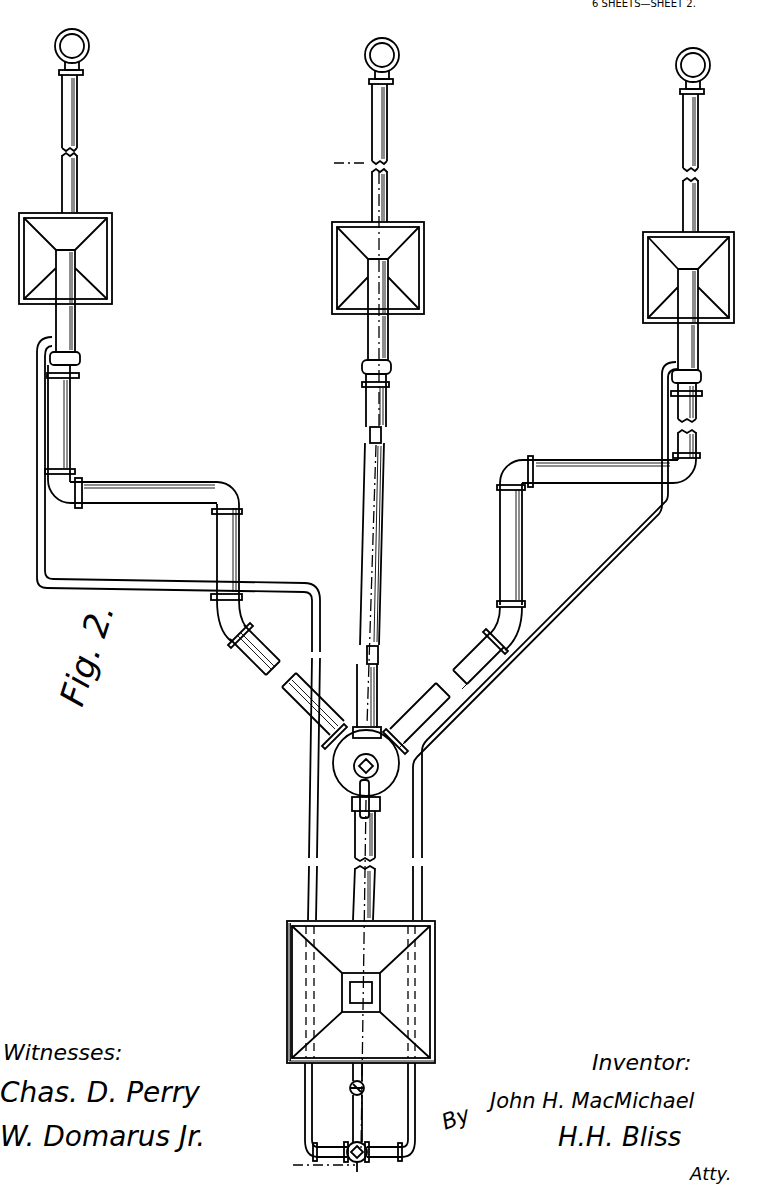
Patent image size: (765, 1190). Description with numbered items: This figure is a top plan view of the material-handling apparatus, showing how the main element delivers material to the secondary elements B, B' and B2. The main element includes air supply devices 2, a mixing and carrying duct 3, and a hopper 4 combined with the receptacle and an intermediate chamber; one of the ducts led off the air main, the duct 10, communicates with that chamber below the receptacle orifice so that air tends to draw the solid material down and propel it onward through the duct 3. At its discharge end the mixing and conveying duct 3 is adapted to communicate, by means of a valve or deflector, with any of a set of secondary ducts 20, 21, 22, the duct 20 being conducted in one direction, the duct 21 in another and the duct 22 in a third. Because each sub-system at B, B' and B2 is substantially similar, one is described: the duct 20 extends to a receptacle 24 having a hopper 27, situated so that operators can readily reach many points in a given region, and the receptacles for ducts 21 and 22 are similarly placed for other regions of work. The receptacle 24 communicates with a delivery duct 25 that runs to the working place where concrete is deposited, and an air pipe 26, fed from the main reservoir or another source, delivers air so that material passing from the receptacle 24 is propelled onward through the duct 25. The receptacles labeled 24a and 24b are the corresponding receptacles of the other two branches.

The air supply devices 2 is at (360, 1117).
The mixing and carrying duct 3 is at (352, 880).
The hopper 4 is at (292, 958).
The duct 10 is at (354, 1112).
The secondary duct 20 is at (363, 519).
The secondary duct 21 is at (215, 546).
The secondary duct 22 is at (506, 537).
The receptacle 24 is at (363, 259).
The left hopper 24a is at (68, 166).
The right hopper 24b is at (701, 185).
The delivery duct 25 is at (377, 118).
The air pipe 26 is at (385, 643).
The hopper 27 is at (341, 251).
The secondary element B is at (346, 617).
The secondary element B' is at (542, 621).
The secondary element B2 is at (192, 612).